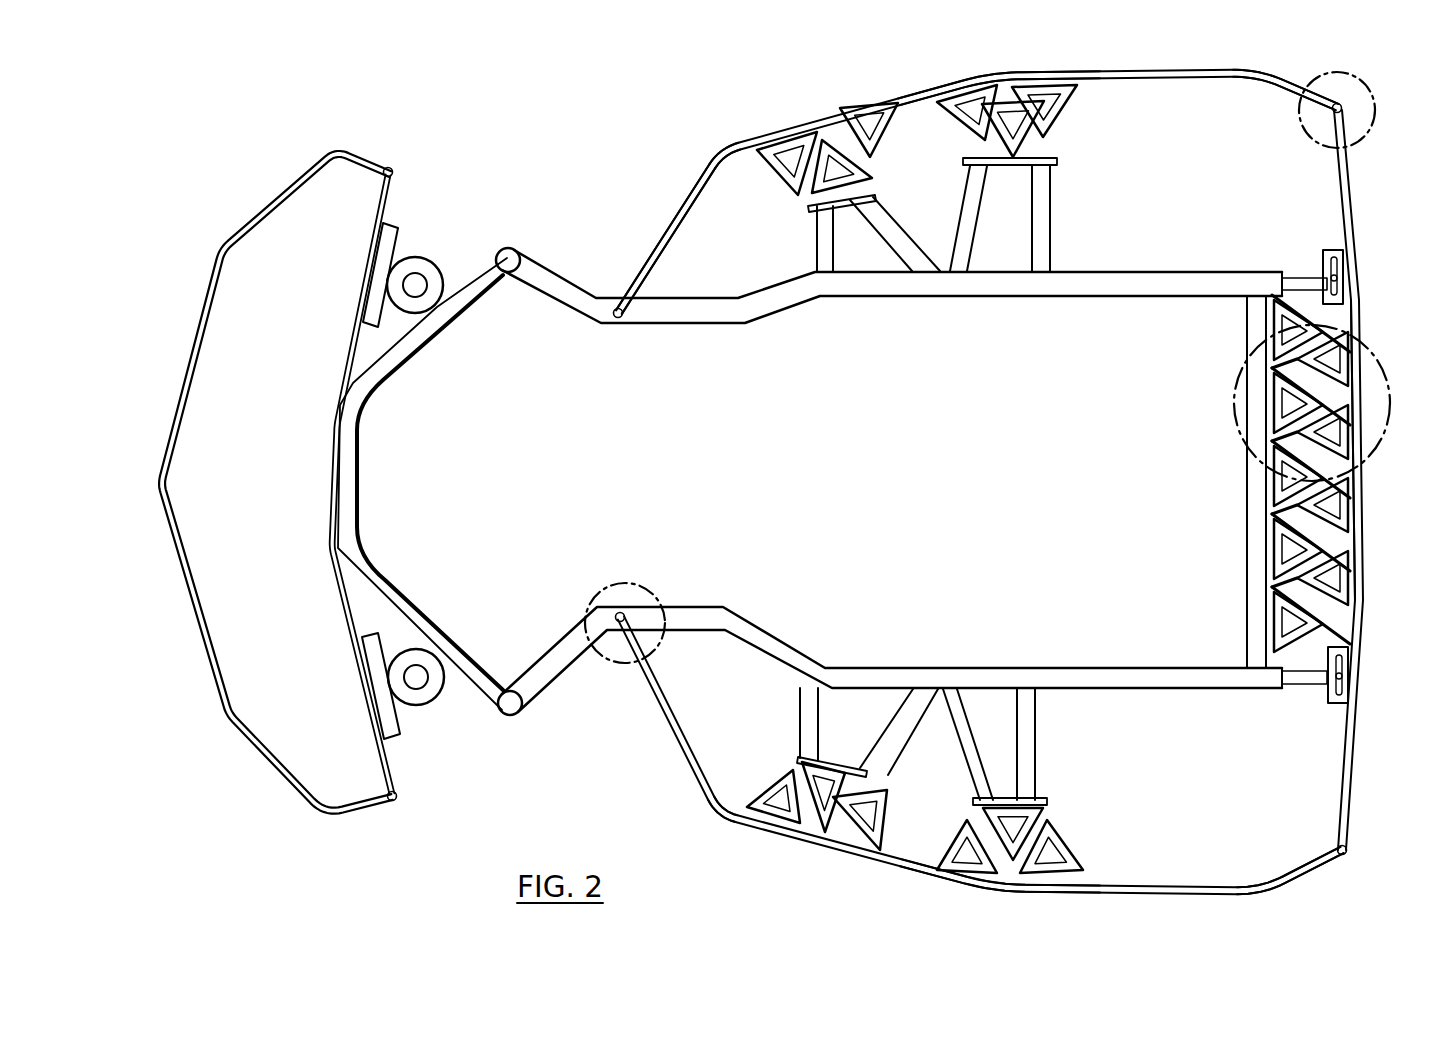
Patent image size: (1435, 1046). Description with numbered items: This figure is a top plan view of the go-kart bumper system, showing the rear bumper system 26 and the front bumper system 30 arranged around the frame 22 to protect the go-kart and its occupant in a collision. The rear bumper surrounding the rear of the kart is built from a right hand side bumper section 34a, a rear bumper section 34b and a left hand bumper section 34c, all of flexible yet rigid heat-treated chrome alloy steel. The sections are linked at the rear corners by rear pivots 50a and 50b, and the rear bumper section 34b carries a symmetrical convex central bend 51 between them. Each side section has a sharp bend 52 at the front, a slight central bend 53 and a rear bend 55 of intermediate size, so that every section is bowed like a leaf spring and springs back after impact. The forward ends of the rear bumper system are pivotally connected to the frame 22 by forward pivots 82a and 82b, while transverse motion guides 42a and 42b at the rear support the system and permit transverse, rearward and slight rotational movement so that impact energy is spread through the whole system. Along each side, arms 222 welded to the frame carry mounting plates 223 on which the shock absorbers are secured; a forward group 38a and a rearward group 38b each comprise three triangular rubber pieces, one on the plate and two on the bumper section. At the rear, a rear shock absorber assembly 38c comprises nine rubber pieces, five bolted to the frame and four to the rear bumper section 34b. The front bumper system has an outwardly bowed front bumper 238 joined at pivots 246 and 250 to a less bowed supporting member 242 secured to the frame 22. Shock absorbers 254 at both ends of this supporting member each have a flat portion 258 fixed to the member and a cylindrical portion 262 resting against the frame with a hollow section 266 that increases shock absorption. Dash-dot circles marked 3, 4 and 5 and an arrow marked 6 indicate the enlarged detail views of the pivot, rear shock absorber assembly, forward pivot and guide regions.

The frame 22 is at (844, 481).
The rear bumper system 26 is at (1214, 68).
The front bumper system 30 is at (308, 482).
The right hand side bumper section 34a is at (675, 207).
The rear bumper section 34b is at (1354, 322).
The left hand bumper section 34c is at (1152, 884).
The forward group of shock absorbers 38a is at (832, 148).
The rearward group of shock absorbers 38b is at (1069, 112).
The rear shock absorber assembly 38c is at (1352, 507).
The transverse motion guide 42a is at (1364, 672).
The transverse motion guide 42b is at (1352, 271).
The rear pivot 50a is at (1344, 109).
The rear pivot 50b is at (1347, 852).
The convex central bend 51 is at (1360, 478).
The sharp bend 52 is at (718, 147).
The central bend 53 is at (965, 72).
The rear bend 55 is at (1296, 74).
The forward pivot 82a is at (617, 320).
The forward pivot 82b is at (620, 613).
The arms 222 is at (885, 216).
The mounting plates 223 is at (813, 203).
The front bumper 238 is at (218, 290).
The supporting member 242 is at (350, 350).
The pivot 246 is at (393, 171).
The pivot 250 is at (397, 796).
The shock absorbers 254 is at (396, 483).
The flat portion 258 is at (393, 232).
The cylindrical portion 262 is at (447, 500).
The hollow section 266 is at (420, 283).
The detail circle 3 is at (1304, 137).
The detail circle 4 is at (1234, 393).
The detail circle 5 is at (653, 590).
The detail view arrow 6 is at (1273, 726).